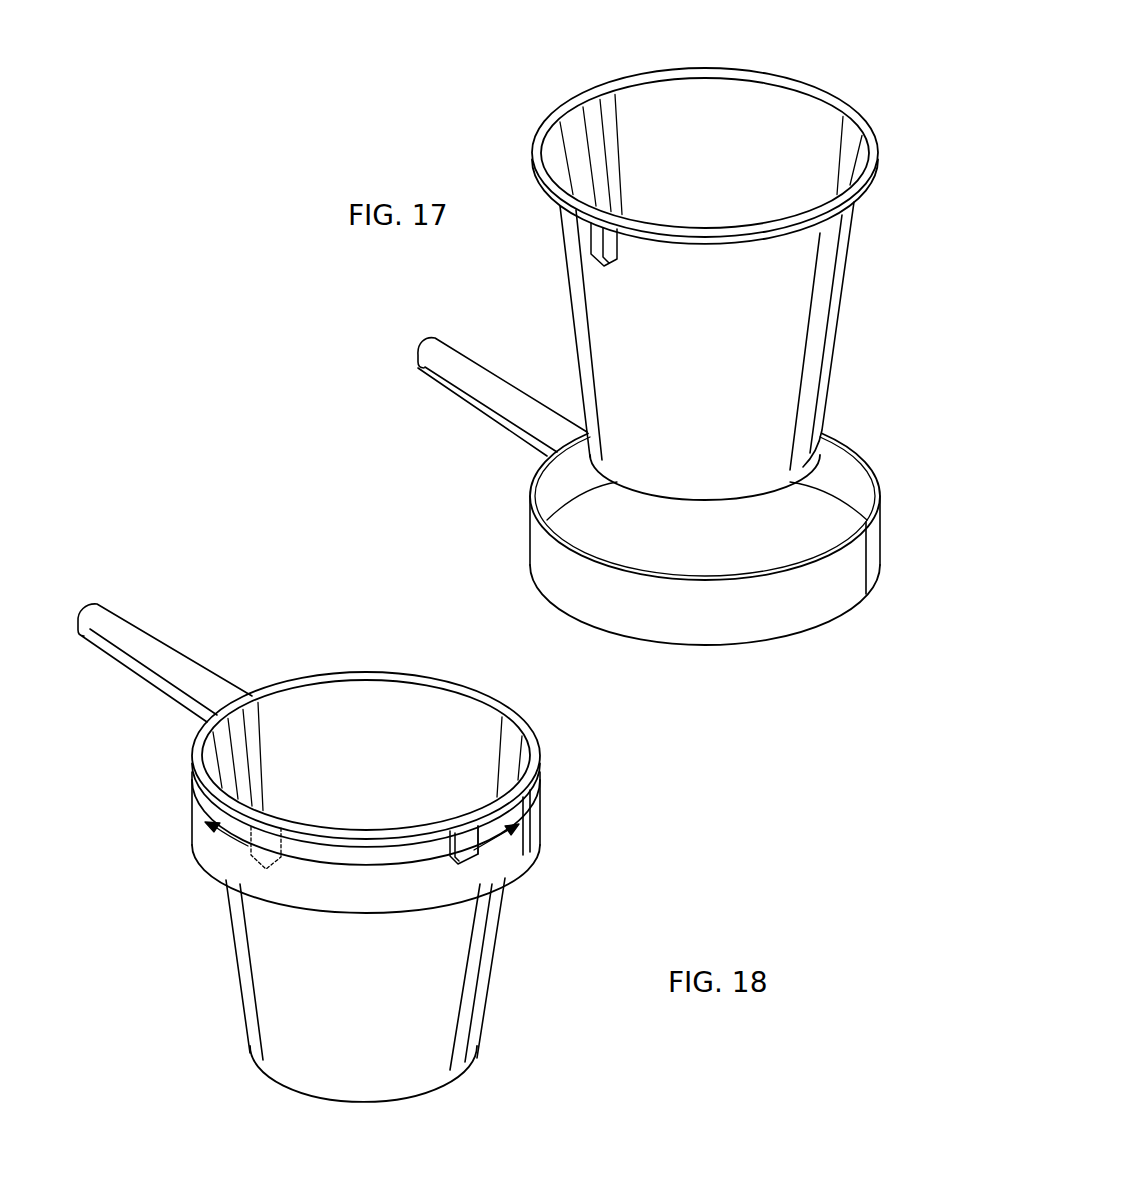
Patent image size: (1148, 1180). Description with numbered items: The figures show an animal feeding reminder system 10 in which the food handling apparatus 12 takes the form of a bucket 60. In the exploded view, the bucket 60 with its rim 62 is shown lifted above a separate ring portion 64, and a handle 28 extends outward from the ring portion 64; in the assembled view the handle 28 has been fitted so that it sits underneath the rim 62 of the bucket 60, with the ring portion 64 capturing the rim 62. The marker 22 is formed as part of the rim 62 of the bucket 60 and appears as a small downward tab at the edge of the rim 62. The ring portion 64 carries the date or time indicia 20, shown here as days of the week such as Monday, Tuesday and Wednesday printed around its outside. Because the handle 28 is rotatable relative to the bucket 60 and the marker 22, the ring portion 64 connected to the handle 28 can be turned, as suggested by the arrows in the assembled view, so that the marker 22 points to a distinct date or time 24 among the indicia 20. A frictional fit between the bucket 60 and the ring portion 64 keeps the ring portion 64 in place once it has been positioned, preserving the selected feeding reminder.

In FIG. 17, the animal feeding reminder system 10 is at (637, 361).
In FIG. 18, the animal feeding reminder system 10 is at (348, 834).
In FIG. 17, the food handling apparatus 12 is at (637, 361).
In FIG. 18, the food handling apparatus 12 is at (348, 834).
In FIG. 17, the date or time indicia 20 is at (717, 635).
In FIG. 18, the date or time indicia 20 is at (353, 900).
In FIG. 17, the marker 22 is at (605, 245).
In FIG. 18, the marker 22 is at (470, 840).
In FIG. 18, the distinct date or time 24 is at (467, 867).
In FIG. 17, the handle 28 is at (448, 363).
In FIG. 18, the handle 28 is at (142, 640).
In FIG. 17, the bucket 60 is at (782, 350).
In FIG. 18, the bucket 60 is at (442, 1023).
In FIG. 17, the rim 62 is at (565, 110).
In FIG. 18, the rim 62 is at (483, 693).
In FIG. 17, the ring portion 64 is at (868, 558).
In FIG. 18, the ring portion 64 is at (532, 810).